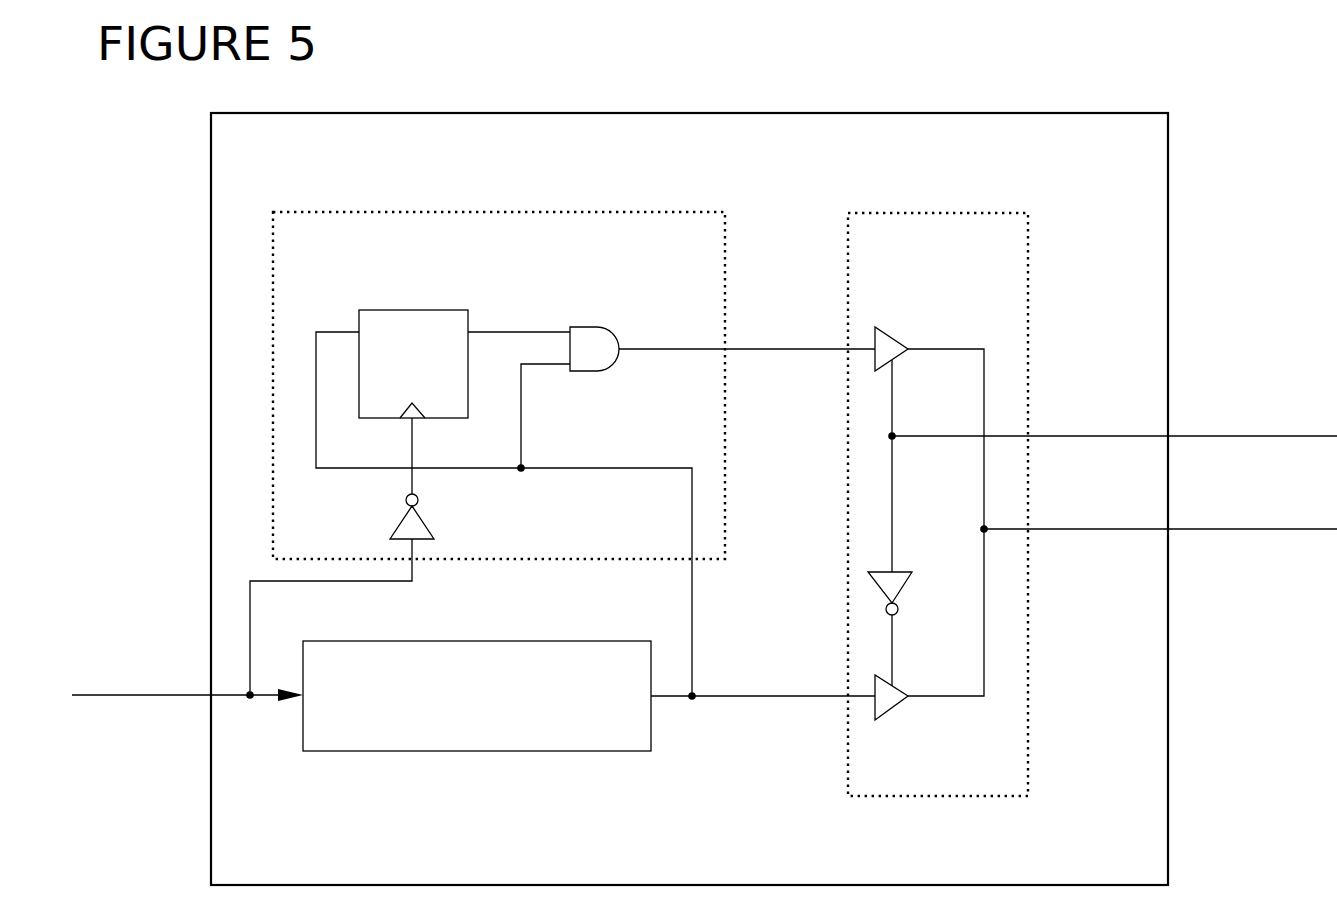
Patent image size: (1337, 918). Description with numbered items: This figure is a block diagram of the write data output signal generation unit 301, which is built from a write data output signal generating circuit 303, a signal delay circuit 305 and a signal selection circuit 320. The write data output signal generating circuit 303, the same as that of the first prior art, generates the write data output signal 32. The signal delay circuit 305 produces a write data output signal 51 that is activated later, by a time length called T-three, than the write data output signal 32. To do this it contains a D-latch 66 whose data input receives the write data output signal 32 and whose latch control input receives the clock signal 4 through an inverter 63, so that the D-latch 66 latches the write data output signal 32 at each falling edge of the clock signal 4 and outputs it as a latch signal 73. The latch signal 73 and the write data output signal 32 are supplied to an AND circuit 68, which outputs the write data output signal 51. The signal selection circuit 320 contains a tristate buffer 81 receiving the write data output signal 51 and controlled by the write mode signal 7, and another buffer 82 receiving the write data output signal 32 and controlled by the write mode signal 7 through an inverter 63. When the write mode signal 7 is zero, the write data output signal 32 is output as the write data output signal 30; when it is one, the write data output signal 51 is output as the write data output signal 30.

The write data output signal generation unit 301 is at (722, 113).
The signal delay circuit 305 is at (423, 211).
The signal selection circuit 320 is at (862, 213).
The D-latch 66 is at (409, 310).
The latch signal 73 is at (505, 332).
The AND circuit 68 is at (598, 326).
The inverter 63 is at (426, 519).
The write data output signal 51 is at (766, 349).
The tristate buffer 81 is at (892, 327).
The write mode signal 7 is at (1194, 436).
The write data output signal 30 is at (1190, 530).
The buffer 82 is at (889, 716).
The write data output signal 32 is at (768, 696).
The write data output signal generating circuit 303 is at (598, 641).
The clock signal 4 is at (110, 695).